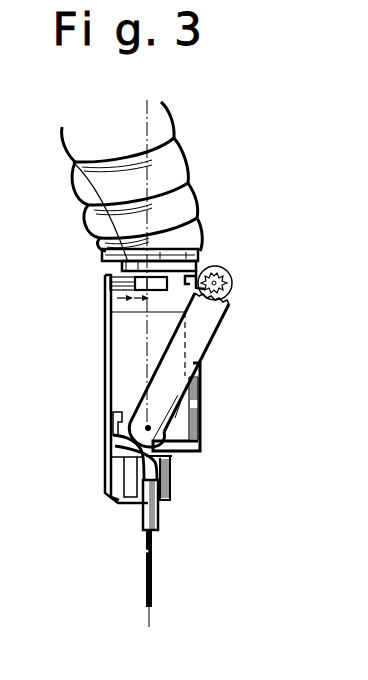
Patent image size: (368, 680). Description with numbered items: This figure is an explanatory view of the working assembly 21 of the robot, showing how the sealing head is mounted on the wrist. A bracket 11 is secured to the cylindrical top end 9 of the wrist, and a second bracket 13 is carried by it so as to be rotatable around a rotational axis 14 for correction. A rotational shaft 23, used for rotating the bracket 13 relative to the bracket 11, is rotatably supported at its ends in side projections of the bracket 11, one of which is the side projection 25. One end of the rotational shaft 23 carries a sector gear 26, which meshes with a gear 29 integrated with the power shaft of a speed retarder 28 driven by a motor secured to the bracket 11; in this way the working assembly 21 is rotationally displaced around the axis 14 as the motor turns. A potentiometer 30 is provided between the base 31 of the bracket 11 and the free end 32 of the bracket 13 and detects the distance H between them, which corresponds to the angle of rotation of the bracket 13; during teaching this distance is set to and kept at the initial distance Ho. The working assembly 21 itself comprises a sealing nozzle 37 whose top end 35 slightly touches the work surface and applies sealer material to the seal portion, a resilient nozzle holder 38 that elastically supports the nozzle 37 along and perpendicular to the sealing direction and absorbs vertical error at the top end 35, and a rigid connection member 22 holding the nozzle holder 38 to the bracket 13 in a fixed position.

The cylindrical top end 9 is at (85, 218).
The base 31 is at (72, 158).
The potentiometer 30 is at (96, 242).
The bracket 11 is at (197, 248).
The free end 32 is at (106, 277).
The distance H is at (108, 290).
The initial distance Ho is at (110, 312).
The bracket 13 is at (106, 340).
The sector gear 26 is at (167, 370).
The rigid connection member 22 is at (134, 432).
The nozzle holder 38 is at (110, 483).
The gear 29 is at (222, 270).
The speed retarder 28 is at (233, 292).
The side projection 25 is at (177, 418).
The rotational shaft 23 is at (200, 436).
The working assembly 21 is at (170, 531).
The sealing nozzle 37 is at (143, 551).
The top end 35 is at (149, 607).
The rotational axis 14 is at (13, 610).